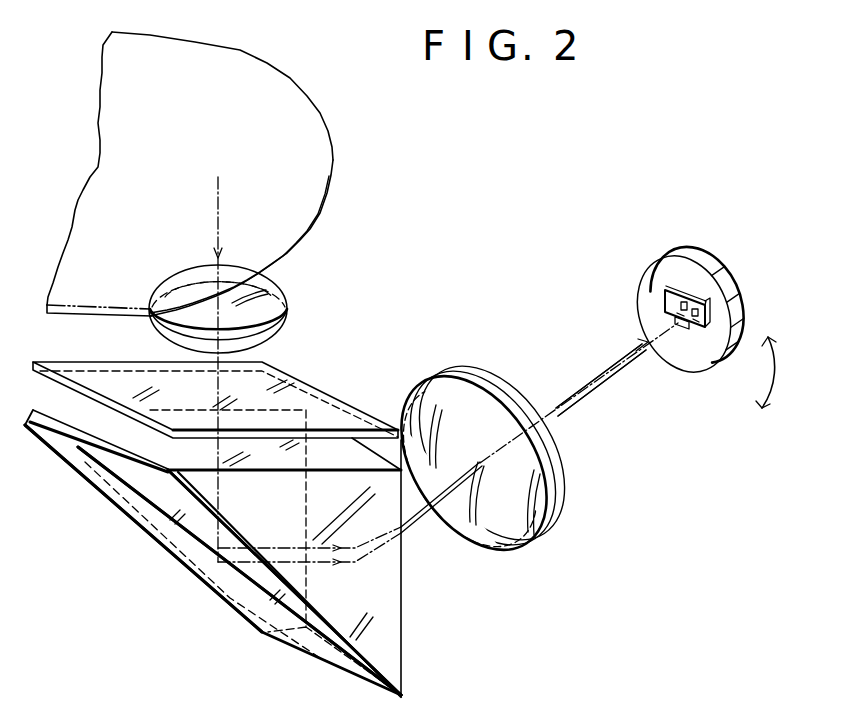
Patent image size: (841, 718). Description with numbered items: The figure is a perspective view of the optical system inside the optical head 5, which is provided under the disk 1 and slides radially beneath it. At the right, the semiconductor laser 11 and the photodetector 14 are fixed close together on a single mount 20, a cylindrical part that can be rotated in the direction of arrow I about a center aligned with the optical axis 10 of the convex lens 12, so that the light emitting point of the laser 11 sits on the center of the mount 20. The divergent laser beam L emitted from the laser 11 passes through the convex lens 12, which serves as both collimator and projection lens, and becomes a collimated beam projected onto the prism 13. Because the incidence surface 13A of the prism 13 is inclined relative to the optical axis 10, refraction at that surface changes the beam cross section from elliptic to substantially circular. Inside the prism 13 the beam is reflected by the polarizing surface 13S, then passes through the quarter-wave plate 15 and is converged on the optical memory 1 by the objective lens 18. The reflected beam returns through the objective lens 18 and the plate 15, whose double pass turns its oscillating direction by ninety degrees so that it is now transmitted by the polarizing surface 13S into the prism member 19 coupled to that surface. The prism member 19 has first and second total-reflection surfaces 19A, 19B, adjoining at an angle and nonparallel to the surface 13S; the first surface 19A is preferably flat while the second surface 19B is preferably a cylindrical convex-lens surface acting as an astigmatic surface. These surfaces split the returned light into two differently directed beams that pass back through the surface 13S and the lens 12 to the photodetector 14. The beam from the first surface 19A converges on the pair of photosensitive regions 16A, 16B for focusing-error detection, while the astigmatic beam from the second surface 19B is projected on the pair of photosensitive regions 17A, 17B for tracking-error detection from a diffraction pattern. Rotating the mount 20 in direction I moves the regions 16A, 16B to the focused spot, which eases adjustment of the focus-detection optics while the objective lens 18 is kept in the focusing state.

The disk 1 is at (326, 158).
The optical head 5 is at (358, 306).
The optical axis 10 is at (570, 410).
The semiconductor laser 11 is at (690, 330).
The convex lens 12 is at (505, 545).
The prism 13 is at (392, 650).
The incidence surface 13A is at (386, 452).
The polarizing surface 13S is at (80, 440).
The photodetector 14 is at (667, 290).
The quarter-wave plate 15 is at (307, 376).
The photosensitive region 16A is at (695, 312).
The photosensitive region 16B is at (700, 328).
The photosensitive region 17A is at (668, 292).
The photosensitive region 17B is at (670, 317).
The objective lens 18 is at (270, 288).
The prism member 19 is at (211, 585).
The first total-reflection surface 19A is at (140, 530).
The second total-reflection surface 19B is at (283, 612).
The mount 20 is at (627, 291).
The laser beam L is at (219, 493).
The direction of arrow I is at (772, 381).